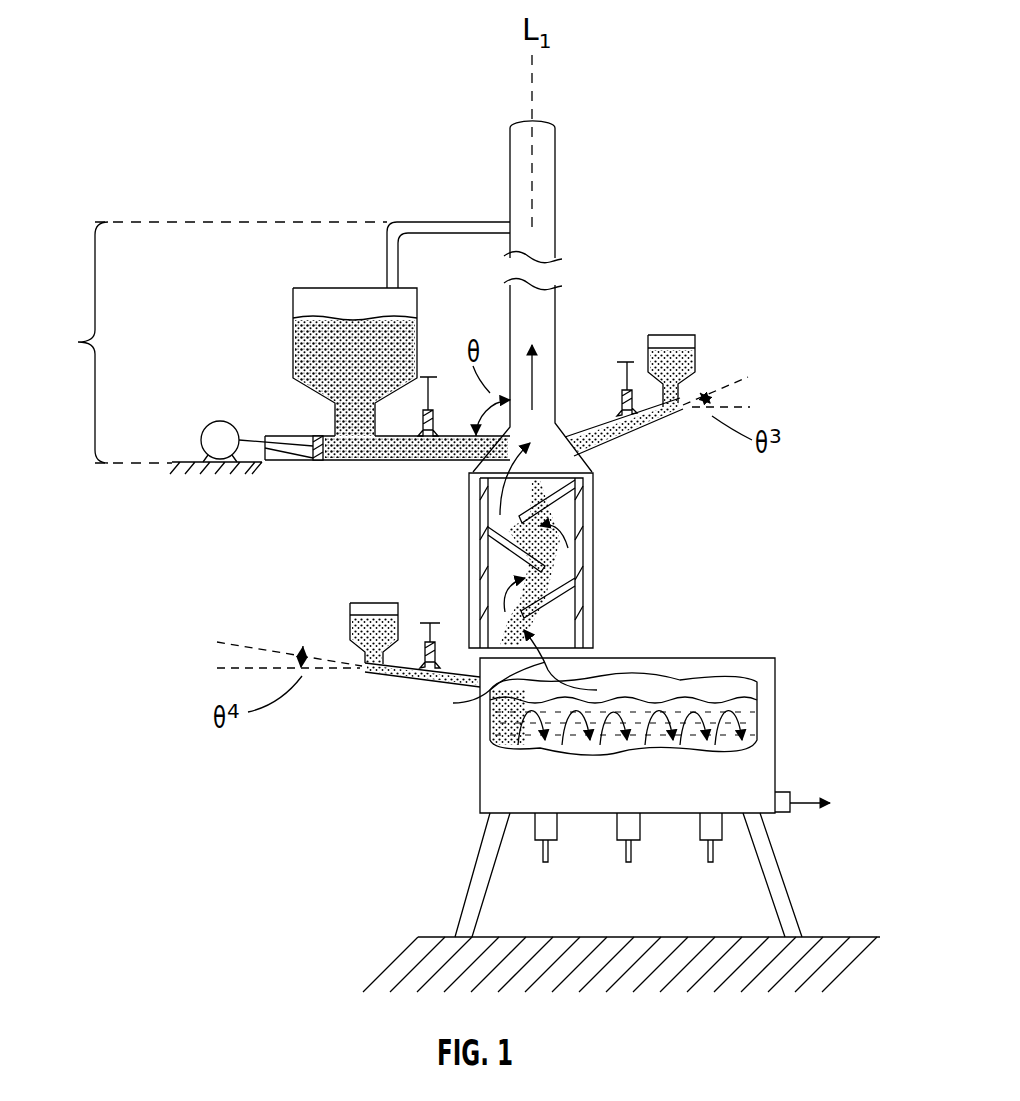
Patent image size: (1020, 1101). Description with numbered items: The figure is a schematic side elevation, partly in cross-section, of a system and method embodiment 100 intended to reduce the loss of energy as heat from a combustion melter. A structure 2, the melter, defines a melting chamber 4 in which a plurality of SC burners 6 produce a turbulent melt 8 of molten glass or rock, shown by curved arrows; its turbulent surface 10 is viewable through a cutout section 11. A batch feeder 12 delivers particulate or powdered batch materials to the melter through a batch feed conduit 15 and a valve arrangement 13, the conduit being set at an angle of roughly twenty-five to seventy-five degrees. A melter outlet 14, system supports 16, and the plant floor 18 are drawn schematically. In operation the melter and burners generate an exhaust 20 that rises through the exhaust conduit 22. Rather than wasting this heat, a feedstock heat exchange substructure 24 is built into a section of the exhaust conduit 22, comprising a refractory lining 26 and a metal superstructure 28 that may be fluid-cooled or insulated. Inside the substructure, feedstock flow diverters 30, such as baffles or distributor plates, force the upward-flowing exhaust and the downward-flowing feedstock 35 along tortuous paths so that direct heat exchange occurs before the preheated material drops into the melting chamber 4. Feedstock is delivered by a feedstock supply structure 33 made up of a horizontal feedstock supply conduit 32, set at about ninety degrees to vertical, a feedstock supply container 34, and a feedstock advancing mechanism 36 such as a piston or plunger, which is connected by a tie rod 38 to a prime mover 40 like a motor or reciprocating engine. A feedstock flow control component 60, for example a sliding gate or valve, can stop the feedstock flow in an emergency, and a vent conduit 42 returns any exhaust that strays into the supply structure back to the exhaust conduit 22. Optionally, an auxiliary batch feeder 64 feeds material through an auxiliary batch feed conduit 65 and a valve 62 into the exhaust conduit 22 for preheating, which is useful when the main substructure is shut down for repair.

The system and method embodiment 100 is at (245, 42).
The structure 2 is at (777, 682).
The melting chamber 4 is at (745, 725).
The SC burners 6 is at (535, 838).
The turbulent melt 8 is at (637, 718).
The turbulent surface 10 is at (697, 700).
The cutout section 11 is at (760, 742).
The batch feeder 12 is at (388, 672).
The valve arrangement 13 is at (440, 652).
The melter outlet 14 is at (783, 815).
The batch feed conduit 15 is at (415, 677).
The system supports 16 is at (470, 930).
The plant floor 18 is at (840, 937).
The exhaust 20 is at (483, 691).
The exhaust conduit 22 is at (557, 198).
The feedstock heat exchange substructure 24 is at (578, 497).
The refractory lining 26 is at (585, 535).
The metal superstructure 28 is at (595, 555).
The feedstock flow diverters 30 is at (565, 585).
The horizontal feedstock supply conduit 32 is at (385, 462).
The feedstock supply structure 33 is at (214, 342).
The feedstock supply container 34 is at (292, 338).
The feedstock 35 is at (338, 318).
The feedstock advancing mechanism 36 is at (310, 458).
The tie rod 38 is at (255, 437).
The prime mover 40 is at (220, 421).
The vent conduit 42 is at (442, 220).
The feedstock flow control component 60 is at (435, 424).
The valve 62 is at (635, 380).
The auxiliary batch feeder 64 is at (698, 360).
The auxiliary batch feed conduit 65 is at (622, 430).